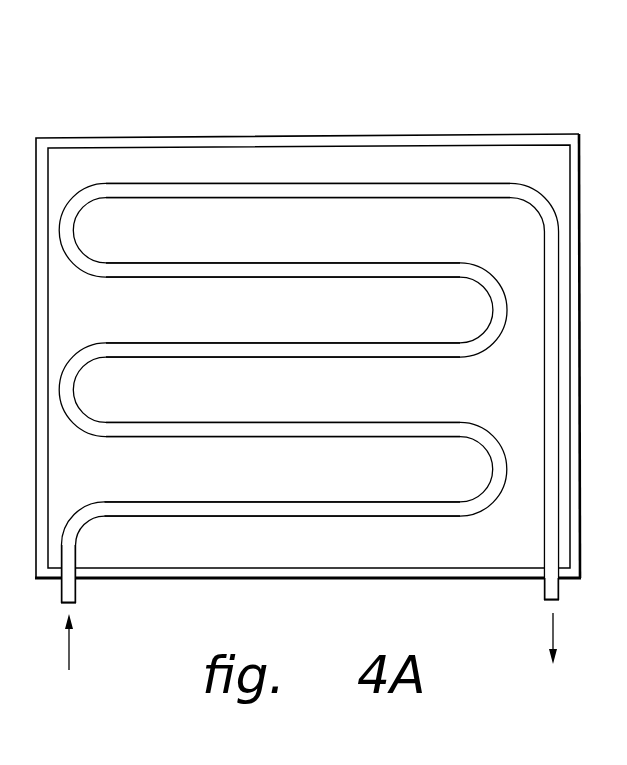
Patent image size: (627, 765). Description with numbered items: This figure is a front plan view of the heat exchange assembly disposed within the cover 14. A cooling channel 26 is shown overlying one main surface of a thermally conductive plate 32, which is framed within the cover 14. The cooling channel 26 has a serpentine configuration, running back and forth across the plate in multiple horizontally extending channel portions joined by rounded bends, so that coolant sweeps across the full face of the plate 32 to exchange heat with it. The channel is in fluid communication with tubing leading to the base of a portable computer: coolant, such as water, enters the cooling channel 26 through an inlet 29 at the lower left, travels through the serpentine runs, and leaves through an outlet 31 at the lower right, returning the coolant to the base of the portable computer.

The cover 14 is at (257, 122).
The thermally conductive plate 32 is at (497, 145).
The cooling channel 26 is at (545, 366).
The inlet 29 is at (66, 604).
The outlet 31 is at (549, 597).